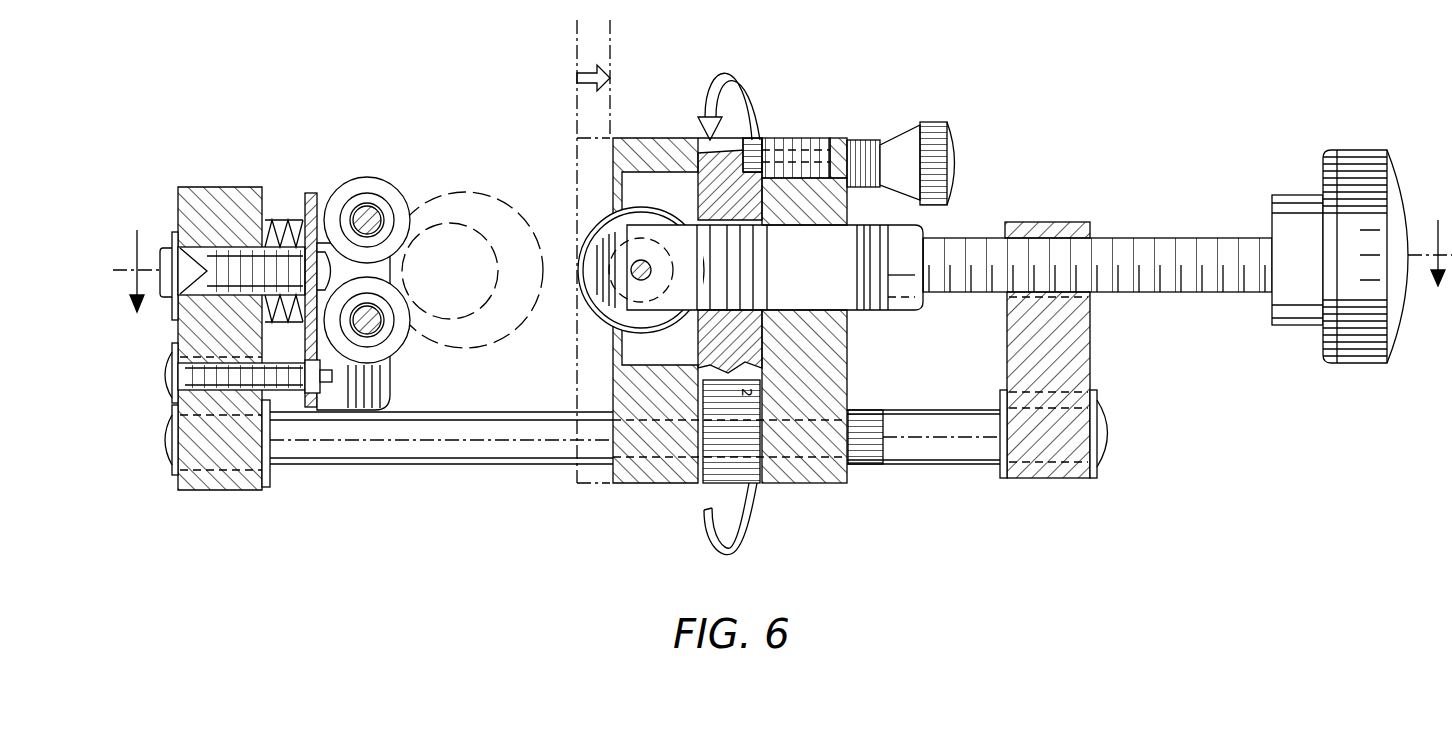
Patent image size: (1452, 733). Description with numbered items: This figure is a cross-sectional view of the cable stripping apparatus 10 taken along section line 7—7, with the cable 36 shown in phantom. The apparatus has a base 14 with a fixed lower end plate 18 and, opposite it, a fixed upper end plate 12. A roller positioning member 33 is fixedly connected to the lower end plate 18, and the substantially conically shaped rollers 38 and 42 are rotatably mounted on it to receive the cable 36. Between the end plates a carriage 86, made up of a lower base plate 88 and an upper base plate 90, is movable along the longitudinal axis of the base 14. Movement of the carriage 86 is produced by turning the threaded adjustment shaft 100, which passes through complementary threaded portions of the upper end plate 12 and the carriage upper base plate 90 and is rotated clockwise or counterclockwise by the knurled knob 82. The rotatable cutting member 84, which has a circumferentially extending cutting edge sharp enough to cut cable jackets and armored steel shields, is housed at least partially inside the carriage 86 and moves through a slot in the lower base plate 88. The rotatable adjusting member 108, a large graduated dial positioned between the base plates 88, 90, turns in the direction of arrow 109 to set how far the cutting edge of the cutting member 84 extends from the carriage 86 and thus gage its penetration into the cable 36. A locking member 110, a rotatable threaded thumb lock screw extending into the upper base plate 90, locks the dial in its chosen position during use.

The section line 7— 7 is at (782, 252).
The cable stripping apparatus 10 is at (1027, 137).
The fixed upper end plate 12 is at (1007, 480).
The base 14 is at (247, 180).
The lower end plate 18 is at (188, 490).
The roller positioning member 33 is at (318, 192).
The cable 36 is at (477, 350).
The roller 38 is at (385, 210).
The roller 42 is at (388, 362).
The knurled knob 82 is at (1357, 363).
The cutting member 84 is at (586, 330).
The carriage 86 is at (887, 120).
The lower base plate 88 is at (633, 483).
The upper base plate 90 is at (800, 484).
The threaded adjustment shaft 100 is at (1180, 292).
The rotatable adjusting member 108 is at (710, 484).
The arrow 109 is at (752, 70).
The locking member 110 is at (945, 122).